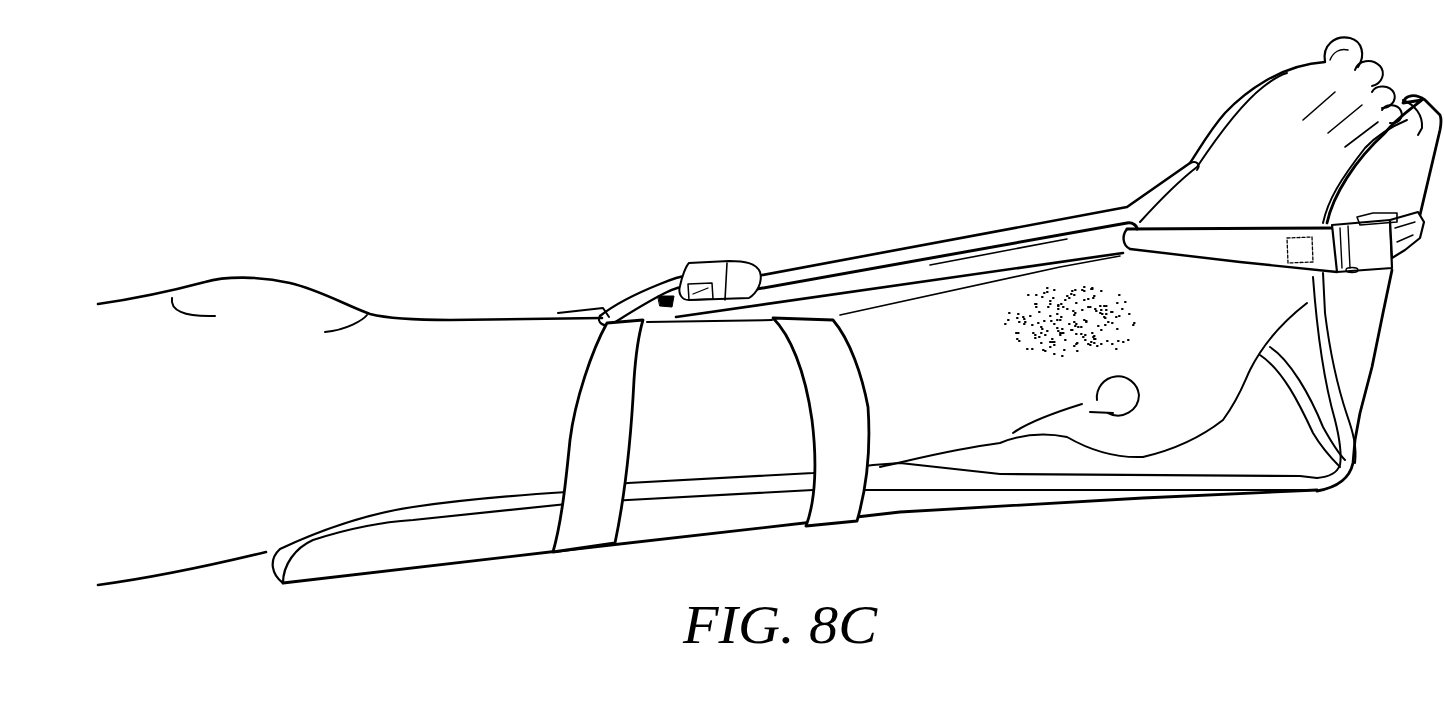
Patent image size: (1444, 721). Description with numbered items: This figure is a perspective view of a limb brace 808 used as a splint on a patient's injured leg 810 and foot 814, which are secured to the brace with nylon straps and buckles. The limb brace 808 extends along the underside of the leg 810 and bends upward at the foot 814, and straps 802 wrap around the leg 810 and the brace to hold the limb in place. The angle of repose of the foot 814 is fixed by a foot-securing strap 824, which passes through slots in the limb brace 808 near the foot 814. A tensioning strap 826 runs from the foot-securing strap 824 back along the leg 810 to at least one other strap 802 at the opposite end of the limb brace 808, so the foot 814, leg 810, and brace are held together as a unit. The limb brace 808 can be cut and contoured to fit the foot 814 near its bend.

The strap 802 is at (593, 410).
The limb brace 808 is at (448, 549).
The leg 810 is at (478, 335).
The foot 814 is at (1245, 142).
The foot-securing strap 824 is at (1193, 240).
The tensioning strap 826 is at (966, 226).